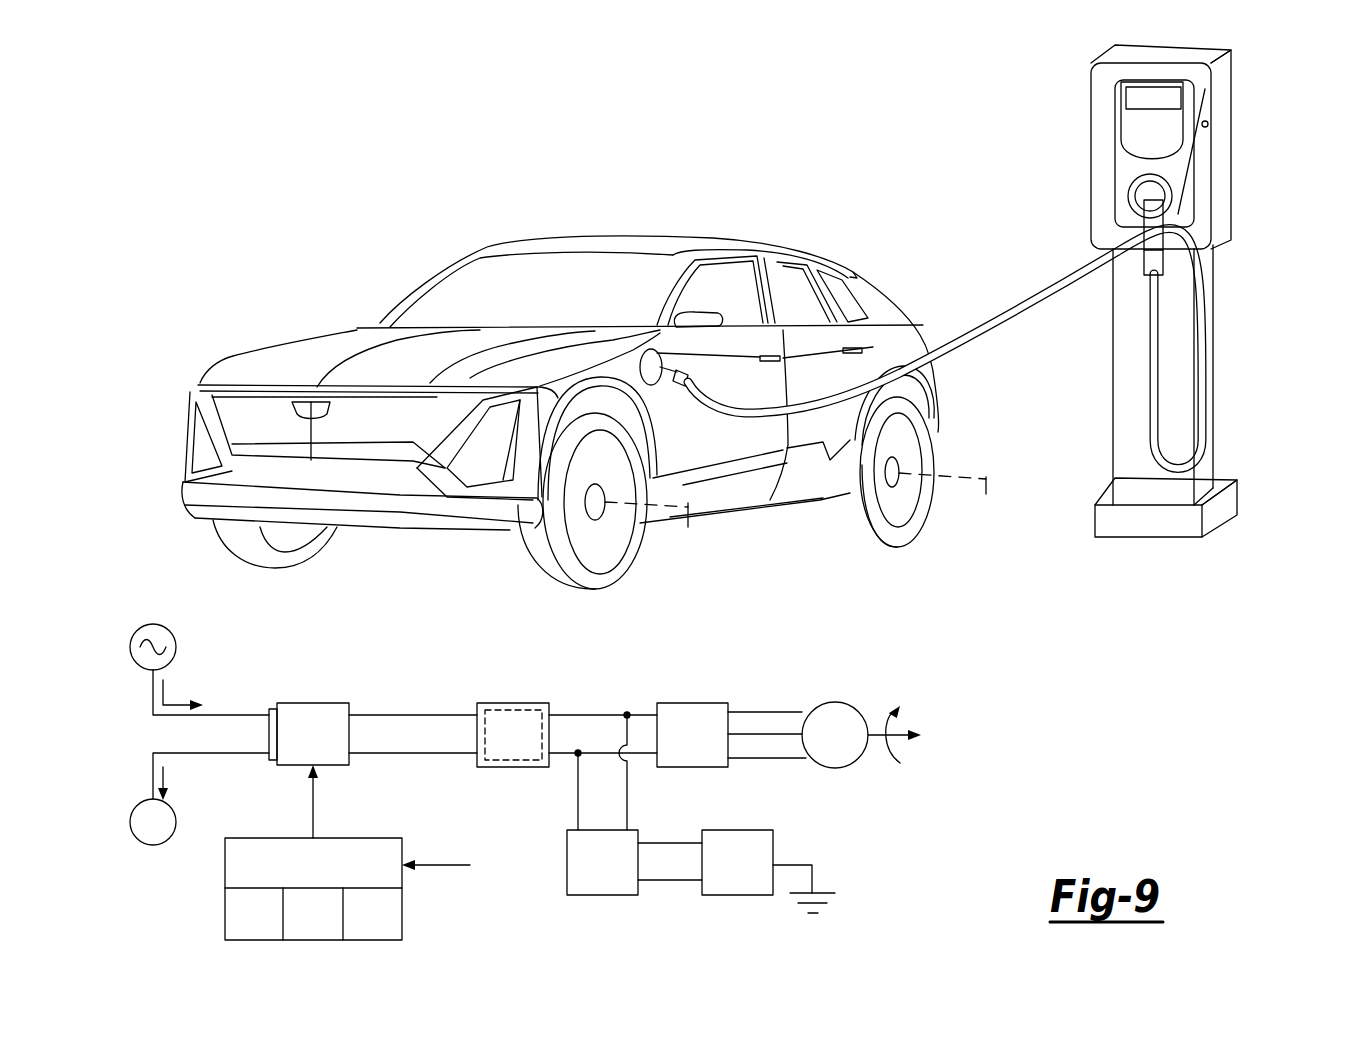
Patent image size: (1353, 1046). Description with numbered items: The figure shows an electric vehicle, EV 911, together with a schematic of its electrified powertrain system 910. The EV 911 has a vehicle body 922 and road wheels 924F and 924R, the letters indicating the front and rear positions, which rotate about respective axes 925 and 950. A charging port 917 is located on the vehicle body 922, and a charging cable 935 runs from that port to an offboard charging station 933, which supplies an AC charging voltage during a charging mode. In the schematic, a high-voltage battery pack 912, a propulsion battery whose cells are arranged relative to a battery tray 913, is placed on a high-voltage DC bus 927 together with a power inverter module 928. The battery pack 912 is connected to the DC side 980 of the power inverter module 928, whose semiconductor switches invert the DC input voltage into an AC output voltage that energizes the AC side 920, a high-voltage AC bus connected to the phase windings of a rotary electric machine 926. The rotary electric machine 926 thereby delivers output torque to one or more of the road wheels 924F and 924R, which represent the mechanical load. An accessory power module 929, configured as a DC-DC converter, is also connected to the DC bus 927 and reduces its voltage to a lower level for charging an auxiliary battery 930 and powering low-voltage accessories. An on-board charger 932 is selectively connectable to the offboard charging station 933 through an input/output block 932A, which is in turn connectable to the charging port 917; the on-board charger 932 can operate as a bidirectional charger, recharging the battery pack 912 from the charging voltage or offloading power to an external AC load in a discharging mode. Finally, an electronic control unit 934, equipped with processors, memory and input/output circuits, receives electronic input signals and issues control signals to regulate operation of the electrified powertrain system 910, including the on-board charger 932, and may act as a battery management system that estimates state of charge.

The electrified powertrain system 910 is at (970, 650).
The EV 911 is at (798, 203).
The high-voltage battery pack 912 is at (513, 702).
The battery tray 913 is at (477, 737).
The charging port 917 is at (647, 362).
The AC side 920 is at (790, 787).
The vehicle body 922 is at (940, 319).
The front road wheels 924F is at (533, 555).
The rear road wheels 924R is at (853, 518).
The axis 925 is at (688, 527).
The rotary electric machine 926 is at (835, 702).
The high-voltage DC bus 927 is at (412, 690).
The power inverter module 928 is at (692, 702).
The accessory power module 929 is at (603, 895).
The auxiliary battery 930 is at (737, 895).
The on-board charger 932 is at (313, 703).
The input/output block 932A is at (273, 707).
The offboard charging station 933 is at (1255, 128).
The electronic control unit 934 is at (365, 838).
The charging cable 935 is at (1071, 279).
The axis 950 is at (986, 494).
The DC side 980 is at (653, 710).